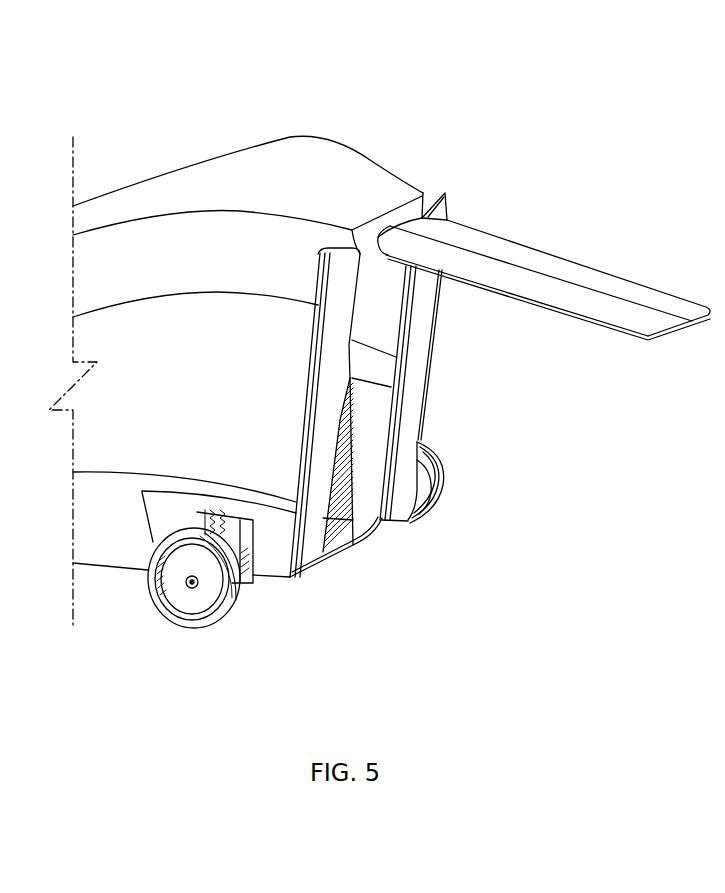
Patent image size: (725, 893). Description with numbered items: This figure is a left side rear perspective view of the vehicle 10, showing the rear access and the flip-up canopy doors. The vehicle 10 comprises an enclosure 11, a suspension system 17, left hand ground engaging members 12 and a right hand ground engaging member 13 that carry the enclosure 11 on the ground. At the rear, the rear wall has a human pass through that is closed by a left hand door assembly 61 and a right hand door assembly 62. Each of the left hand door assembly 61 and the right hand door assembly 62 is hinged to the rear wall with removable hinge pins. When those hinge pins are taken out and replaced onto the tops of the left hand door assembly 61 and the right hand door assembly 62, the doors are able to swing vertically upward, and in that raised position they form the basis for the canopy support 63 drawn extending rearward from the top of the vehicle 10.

The vehicle 10 is at (395, 138).
The enclosure 11 is at (215, 184).
The left hand ground engaging members 12 is at (242, 612).
The right hand ground engaging member 13 is at (433, 515).
The suspension system 17 is at (249, 548).
The left hand door assembly 61 is at (304, 548).
The right hand door assembly 62 is at (397, 500).
The canopy support 63 is at (542, 318).